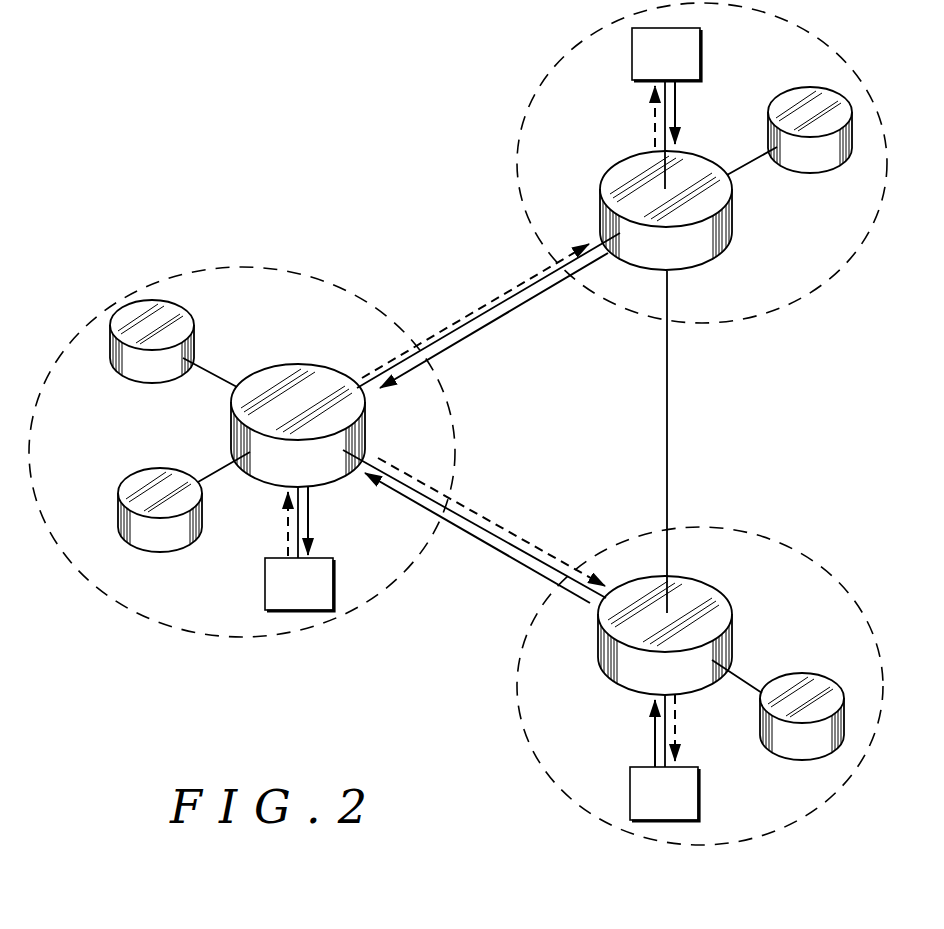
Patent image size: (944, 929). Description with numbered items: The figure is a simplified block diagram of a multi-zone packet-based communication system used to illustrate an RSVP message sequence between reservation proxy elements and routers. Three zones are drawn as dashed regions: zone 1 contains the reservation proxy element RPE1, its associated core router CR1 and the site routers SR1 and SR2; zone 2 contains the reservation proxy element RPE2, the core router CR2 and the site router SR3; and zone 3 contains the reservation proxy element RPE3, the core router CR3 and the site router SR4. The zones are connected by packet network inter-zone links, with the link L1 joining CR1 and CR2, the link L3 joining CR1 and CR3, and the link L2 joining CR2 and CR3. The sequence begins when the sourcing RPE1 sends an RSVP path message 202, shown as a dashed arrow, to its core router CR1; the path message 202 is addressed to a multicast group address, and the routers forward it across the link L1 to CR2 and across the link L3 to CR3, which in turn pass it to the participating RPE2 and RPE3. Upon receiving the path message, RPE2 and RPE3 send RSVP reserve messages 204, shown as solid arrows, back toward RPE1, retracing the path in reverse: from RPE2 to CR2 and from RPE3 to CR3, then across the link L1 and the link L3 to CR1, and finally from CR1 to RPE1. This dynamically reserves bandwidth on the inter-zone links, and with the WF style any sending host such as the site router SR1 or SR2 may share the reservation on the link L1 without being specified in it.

The RSVP path message 202 is at (287, 526).
The RSVP reserve message 204 is at (311, 519).
The zone 1 is at (242, 452).
The zone 2 is at (702, 163).
The zone 3 is at (700, 686).
The core router CR1 is at (298, 425).
The core router CR2 is at (666, 210).
The core router CR3 is at (665, 635).
The site router SR1 is at (152, 341).
The site router SR2 is at (160, 510).
The site router SR3 is at (810, 130).
The site router SR4 is at (802, 716).
The reservation proxy element RPE1 is at (299, 584).
The reservation proxy element RPE2 is at (666, 54).
The reservation proxy element RPE3 is at (664, 794).
The inter-zone link L1 is at (475, 320).
The inter-zone link L2 is at (667, 423).
The inter-zone link L3 is at (485, 530).